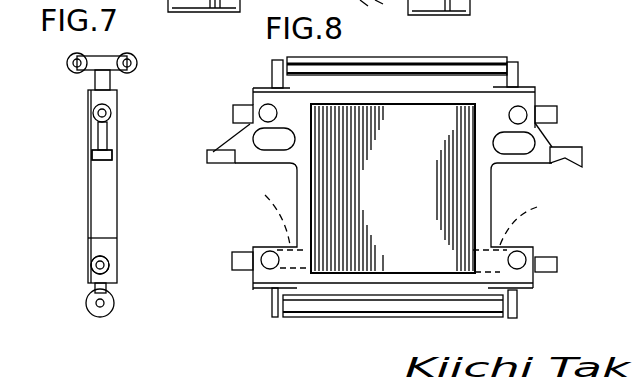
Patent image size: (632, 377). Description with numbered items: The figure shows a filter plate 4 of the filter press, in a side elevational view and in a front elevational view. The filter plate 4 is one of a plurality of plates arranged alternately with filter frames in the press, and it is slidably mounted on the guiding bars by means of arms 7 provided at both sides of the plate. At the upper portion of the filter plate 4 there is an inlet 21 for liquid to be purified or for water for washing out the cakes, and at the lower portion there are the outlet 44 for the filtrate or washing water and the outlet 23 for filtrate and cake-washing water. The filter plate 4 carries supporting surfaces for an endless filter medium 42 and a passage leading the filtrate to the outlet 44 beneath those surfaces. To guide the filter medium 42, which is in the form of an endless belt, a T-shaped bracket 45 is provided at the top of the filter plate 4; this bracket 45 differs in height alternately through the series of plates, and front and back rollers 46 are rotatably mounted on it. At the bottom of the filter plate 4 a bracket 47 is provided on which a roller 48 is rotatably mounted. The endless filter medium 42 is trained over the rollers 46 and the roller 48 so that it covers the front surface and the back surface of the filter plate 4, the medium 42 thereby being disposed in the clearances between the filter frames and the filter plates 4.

In FIG. 7, the filter plate 4 is at (105, 200).
In FIG. 8, the filter plate 4 is at (418, 203).
In FIG. 7, the arms 7 is at (92, 155).
In FIG. 8, the arms 7 is at (207, 157).
In FIG. 8, the inlet 21 is at (233, 110).
In FIG. 8, the outlet 23 is at (262, 254).
In FIG. 8, the filter medium 42 is at (458, 195).
In FIG. 8, the outlet 44 is at (396, 213).
In FIG. 7, the T-shaped bracket 45 is at (98, 71).
In FIG. 8, the T-shaped bracket 45 is at (272, 76).
In FIG. 7, the front and back rollers 46 is at (138, 62).
In FIG. 8, the front and back rollers 46 is at (410, 58).
In FIG. 7, the bracket 47 is at (95, 292).
In FIG. 8, the bracket 47 is at (272, 302).
In FIG. 7, the roller 48 is at (115, 300).
In FIG. 8, the roller 48 is at (480, 310).